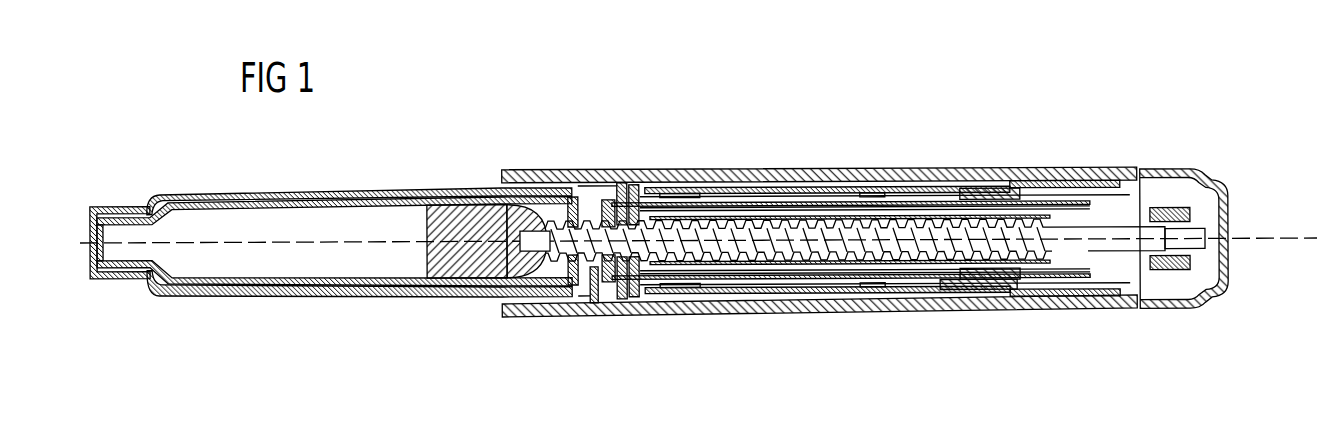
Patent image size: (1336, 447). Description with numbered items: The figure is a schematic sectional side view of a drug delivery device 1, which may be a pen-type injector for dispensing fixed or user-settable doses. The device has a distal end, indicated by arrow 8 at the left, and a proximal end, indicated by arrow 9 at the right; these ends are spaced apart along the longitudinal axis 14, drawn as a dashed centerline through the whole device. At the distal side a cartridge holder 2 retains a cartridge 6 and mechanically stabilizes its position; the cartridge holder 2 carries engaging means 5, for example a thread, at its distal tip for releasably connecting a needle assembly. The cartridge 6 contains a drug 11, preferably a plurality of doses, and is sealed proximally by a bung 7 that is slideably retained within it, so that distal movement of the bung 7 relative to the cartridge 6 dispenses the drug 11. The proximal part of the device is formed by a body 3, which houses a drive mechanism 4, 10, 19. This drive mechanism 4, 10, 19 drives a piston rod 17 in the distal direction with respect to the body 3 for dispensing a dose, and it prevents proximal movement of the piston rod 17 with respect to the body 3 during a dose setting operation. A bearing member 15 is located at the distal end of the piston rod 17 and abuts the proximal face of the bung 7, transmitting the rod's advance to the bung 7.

The drug delivery device 1 is at (1062, 110).
The cartridge holder 2 is at (232, 194).
The body 3 is at (786, 172).
The drive mechanism 4 is at (600, 216).
The engaging means 5 is at (112, 284).
The cartridge 6 is at (320, 199).
The bung 7 is at (430, 255).
The distal end arrow 8 is at (114, 200).
The proximal end arrow 9 is at (1246, 178).
The drive mechanism 10 is at (1062, 292).
The drug 11 is at (337, 272).
The longitudinal axis 14 is at (1268, 243).
The bearing member 15 is at (517, 267).
The piston rod 17 is at (838, 249).
The drive mechanism 19 is at (1023, 264).